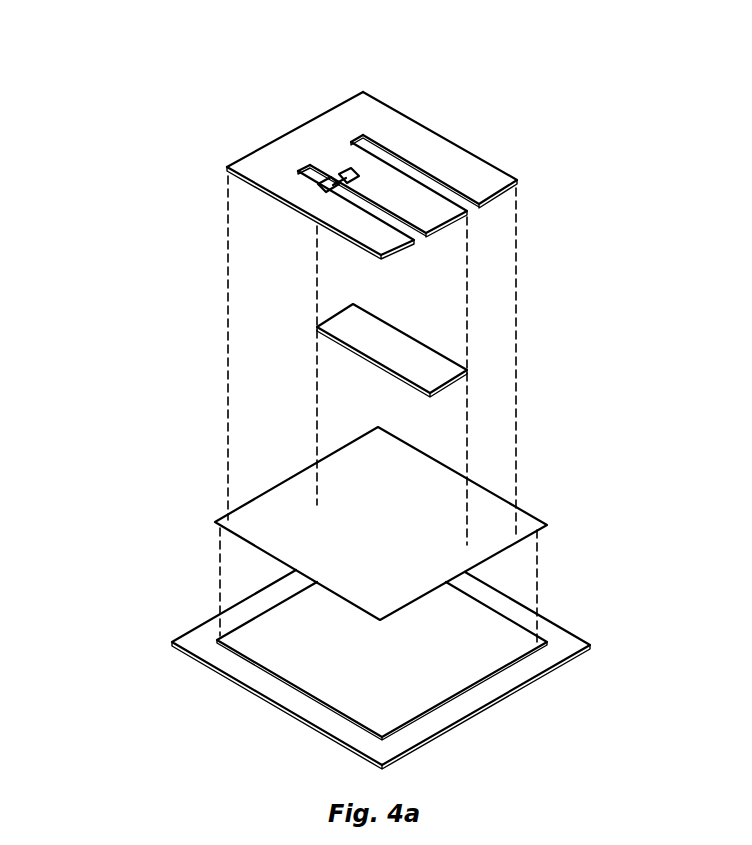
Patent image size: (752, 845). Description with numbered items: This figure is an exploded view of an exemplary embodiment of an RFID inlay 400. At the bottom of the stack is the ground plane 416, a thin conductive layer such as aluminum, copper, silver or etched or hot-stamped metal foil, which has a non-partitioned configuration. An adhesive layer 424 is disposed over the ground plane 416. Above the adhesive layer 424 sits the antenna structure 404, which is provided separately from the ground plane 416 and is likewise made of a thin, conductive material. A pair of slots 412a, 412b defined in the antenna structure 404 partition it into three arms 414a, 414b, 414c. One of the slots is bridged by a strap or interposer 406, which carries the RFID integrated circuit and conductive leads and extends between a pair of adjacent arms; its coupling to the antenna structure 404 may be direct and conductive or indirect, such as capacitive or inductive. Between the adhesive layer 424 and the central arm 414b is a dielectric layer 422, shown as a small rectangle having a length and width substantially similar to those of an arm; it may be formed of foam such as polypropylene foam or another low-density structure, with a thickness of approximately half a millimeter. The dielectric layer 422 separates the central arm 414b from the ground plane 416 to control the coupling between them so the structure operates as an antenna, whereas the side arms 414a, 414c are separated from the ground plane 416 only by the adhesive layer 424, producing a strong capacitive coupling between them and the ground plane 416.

The inlay 400 is at (180, 50).
The antenna structure 404 is at (488, 130).
The strap or interposer 406 is at (333, 160).
The slot 412a is at (312, 163).
The slot 412b is at (367, 132).
The arm 414a is at (293, 193).
The central arm 414b is at (438, 222).
The arm 414c is at (425, 137).
The ground plane 416 is at (442, 690).
The dielectric layer 422 is at (380, 357).
The adhesive layer 424 is at (528, 522).